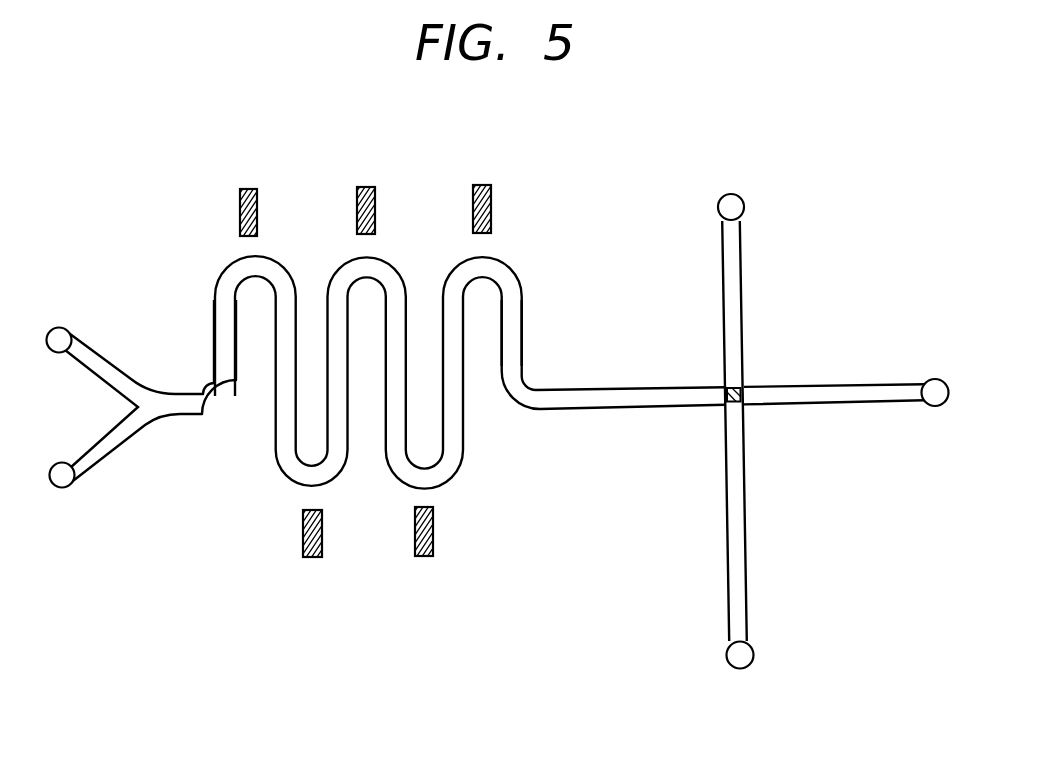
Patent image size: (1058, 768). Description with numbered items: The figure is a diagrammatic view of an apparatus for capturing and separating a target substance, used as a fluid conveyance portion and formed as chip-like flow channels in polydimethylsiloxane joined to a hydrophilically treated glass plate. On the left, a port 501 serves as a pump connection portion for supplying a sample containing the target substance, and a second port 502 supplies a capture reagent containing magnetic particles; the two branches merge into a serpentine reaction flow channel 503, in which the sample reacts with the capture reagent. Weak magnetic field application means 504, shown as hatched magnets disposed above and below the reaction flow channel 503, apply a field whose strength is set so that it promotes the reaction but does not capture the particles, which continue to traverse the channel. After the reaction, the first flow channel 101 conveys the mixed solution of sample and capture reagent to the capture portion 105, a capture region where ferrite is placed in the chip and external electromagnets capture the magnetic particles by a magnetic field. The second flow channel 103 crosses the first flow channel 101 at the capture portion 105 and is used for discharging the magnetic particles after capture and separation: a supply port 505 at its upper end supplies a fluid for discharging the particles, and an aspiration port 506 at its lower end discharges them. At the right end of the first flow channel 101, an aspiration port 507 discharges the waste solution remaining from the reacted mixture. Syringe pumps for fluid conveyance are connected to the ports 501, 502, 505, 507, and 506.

The first flow channel 101 is at (614, 391).
The second flow channel 103 is at (735, 290).
The capture portion 105 is at (738, 387).
The port 501 is at (59, 338).
The port 502 is at (63, 478).
The reaction flow channel 503 is at (509, 276).
The weak magnetic field application means 504 is at (365, 188).
The supply port 505 is at (731, 203).
The aspiration port 506 is at (740, 657).
The aspiration port 507 is at (933, 390).